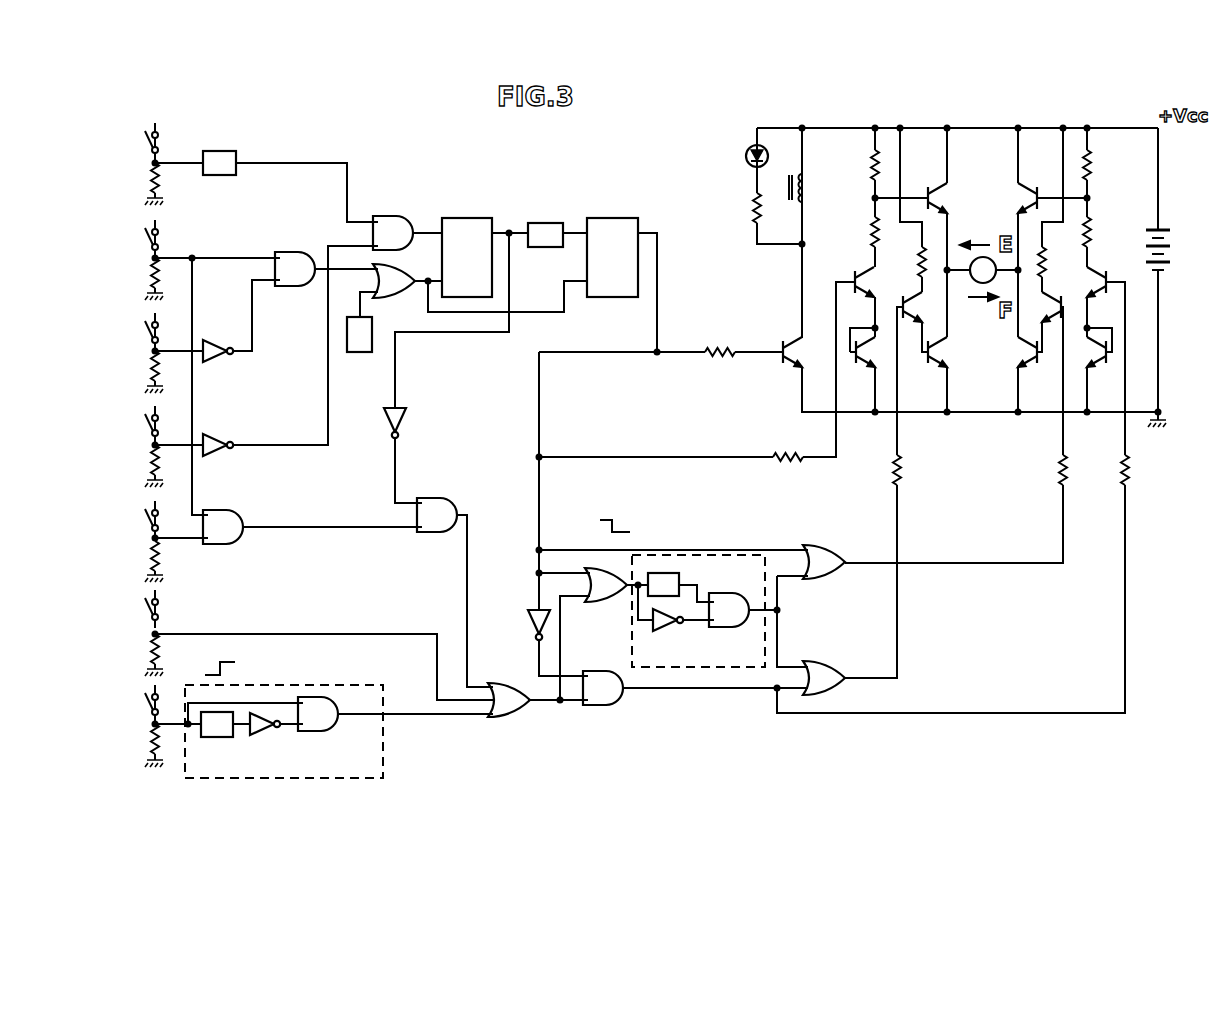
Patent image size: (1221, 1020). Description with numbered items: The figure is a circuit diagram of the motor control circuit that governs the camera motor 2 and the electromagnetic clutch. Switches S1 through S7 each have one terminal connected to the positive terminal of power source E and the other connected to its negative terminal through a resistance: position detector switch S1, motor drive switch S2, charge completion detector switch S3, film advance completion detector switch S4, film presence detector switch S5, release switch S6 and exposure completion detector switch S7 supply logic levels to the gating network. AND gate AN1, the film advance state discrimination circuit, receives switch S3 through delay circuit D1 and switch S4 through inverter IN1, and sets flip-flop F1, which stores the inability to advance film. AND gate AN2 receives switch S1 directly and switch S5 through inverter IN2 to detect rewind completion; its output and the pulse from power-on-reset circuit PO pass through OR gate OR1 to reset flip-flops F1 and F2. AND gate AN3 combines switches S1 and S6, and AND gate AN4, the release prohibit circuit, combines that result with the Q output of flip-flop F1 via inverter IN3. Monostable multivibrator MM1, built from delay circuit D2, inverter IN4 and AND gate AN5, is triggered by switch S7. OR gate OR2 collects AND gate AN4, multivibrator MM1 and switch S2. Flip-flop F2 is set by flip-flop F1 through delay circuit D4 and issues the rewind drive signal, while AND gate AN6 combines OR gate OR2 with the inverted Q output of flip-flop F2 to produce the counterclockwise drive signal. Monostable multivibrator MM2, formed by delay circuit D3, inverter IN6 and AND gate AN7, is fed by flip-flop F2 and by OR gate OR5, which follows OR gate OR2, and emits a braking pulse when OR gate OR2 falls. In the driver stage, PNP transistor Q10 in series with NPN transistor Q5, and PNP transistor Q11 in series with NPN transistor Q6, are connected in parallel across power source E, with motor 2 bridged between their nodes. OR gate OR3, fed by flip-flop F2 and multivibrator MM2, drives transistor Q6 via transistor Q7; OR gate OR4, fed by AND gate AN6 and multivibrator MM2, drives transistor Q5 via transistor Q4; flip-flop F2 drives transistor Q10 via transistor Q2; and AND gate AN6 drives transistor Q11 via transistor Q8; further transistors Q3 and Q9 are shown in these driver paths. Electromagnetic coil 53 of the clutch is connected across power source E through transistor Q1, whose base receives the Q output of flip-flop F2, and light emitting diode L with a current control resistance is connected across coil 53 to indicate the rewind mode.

The position detector switch S1 is at (145, 243).
The motor drive switch S2 is at (145, 613).
The charge completion detector switch S3 is at (145, 143).
The film advance completion detector switch S4 is at (145, 428).
The film presence detector switch S5 is at (145, 335).
The release switch S6 is at (145, 525).
The exposure completion detector switch S7 is at (145, 708).
The delay circuit D1 is at (237, 152).
The delay circuit D2 is at (218, 738).
The delay circuit D3 is at (677, 575).
The delay circuit D4 is at (540, 223).
The AND gate AN1 is at (390, 219).
The AND gate AN2 is at (290, 282).
The AND gate AN3 is at (230, 512).
The AND gate AN4 is at (440, 497).
The AND gate AN5 is at (326, 731).
The AND gate AN6 is at (598, 706).
The AND gate AN7 is at (720, 627).
The inverter IN1 is at (214, 452).
The inverter IN2 is at (214, 358).
The inverter IN3 is at (400, 408).
The inverter IN4 is at (258, 738).
The inverter IN6 is at (662, 630).
The OR gate OR1 is at (402, 297).
The OR gate OR2 is at (498, 717).
The OR gate OR3 is at (816, 547).
The OR gate OR4 is at (836, 678).
The OR gate OR5 is at (597, 598).
The flip-flop F1 is at (463, 218).
The flip-flop F2 is at (610, 218).
The power-on-reset circuit PO is at (372, 340).
The monostable multivibrator MM1 is at (290, 779).
The monostable multivibrator MM2 is at (703, 668).
The light emitting diode L is at (750, 147).
The electromagnetic coil 53 is at (803, 195).
The transistor Q1 is at (808, 354).
The transistor Q2 is at (880, 284).
The transistor Q3 is at (881, 354).
The transistor Q4 is at (924, 309).
The NPN transistor Q5 is at (954, 354).
The NPN transistor Q6 is at (1015, 354).
The transistor Q7 is at (1039, 309).
The transistor Q8 is at (1082, 285).
The transistor Q9 is at (1089, 354).
The PNP transistor Q10 is at (960, 198).
The PNP transistor Q11 is at (1015, 198).
The motor 2 is at (975, 283).
The power supply E is at (1174, 255).